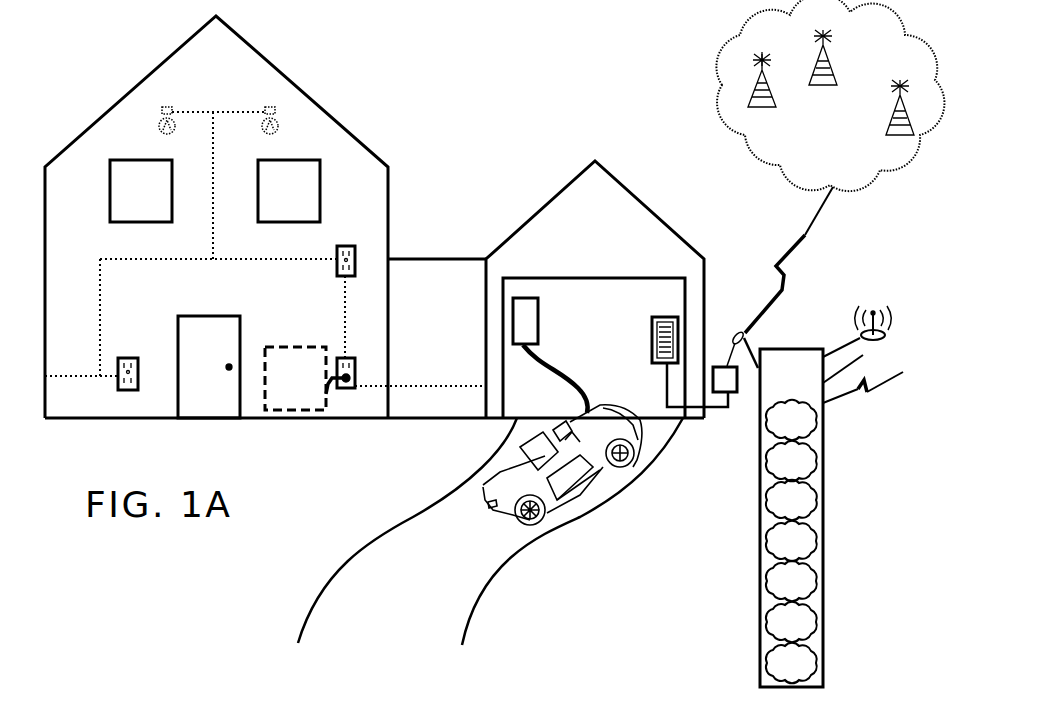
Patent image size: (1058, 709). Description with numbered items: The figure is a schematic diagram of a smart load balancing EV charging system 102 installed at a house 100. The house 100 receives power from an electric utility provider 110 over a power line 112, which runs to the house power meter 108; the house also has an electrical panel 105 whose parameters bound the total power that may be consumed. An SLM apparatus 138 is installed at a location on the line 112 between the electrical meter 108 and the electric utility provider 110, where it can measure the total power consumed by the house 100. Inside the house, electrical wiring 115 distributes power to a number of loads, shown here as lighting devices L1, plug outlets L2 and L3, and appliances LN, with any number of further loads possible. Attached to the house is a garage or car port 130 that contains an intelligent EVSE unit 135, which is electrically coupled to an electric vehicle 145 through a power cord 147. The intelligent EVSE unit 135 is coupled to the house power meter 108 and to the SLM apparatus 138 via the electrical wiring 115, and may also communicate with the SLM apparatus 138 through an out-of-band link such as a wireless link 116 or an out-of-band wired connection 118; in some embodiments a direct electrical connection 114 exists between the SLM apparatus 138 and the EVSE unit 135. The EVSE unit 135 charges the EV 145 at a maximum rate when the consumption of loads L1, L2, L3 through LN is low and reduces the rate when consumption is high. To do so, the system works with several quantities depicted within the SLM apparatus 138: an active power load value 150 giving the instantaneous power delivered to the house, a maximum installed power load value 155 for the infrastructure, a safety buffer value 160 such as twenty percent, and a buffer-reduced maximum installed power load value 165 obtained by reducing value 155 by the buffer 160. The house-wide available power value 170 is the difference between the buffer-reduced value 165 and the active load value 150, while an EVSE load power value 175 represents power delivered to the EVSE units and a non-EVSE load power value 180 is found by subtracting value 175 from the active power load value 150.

The house 100 is at (487, 137).
The smart load balancing EV charging system 102 is at (862, 460).
The electrical panel 105 is at (655, 317).
The house power meter 108 is at (738, 398).
The electric utility provider 110 is at (885, 27).
The power line 112 is at (806, 236).
The direct electrical connection 114 is at (860, 397).
The electrical wiring 115 is at (250, 262).
The wireless link 116 is at (888, 337).
The out-of-band wired connection 118 is at (865, 358).
The garage or car port 130 is at (572, 178).
The intelligent EVSE unit 135 is at (540, 326).
The SLM apparatus 138 is at (787, 348).
The electric vehicle 145 is at (527, 451).
The power cord 147 is at (583, 398).
The active power load value 150 is at (791, 420).
The maximum installed power load value 155 is at (791, 461).
The safety buffer value 160 is at (791, 500).
The buffer-reduced maximum installed power load value 165 is at (791, 541).
The house-wide available power value 170 is at (791, 581).
The EVSE load power value 175 is at (791, 622).
The non-EVSE load power value 180 is at (791, 663).
The lighting devices L1 is at (276, 115).
The plug outlet L2 is at (337, 256).
The plug outlet L3 is at (127, 360).
The appliances LN is at (279, 345).